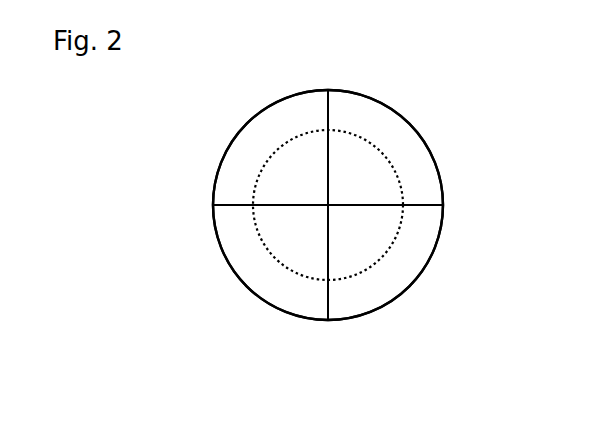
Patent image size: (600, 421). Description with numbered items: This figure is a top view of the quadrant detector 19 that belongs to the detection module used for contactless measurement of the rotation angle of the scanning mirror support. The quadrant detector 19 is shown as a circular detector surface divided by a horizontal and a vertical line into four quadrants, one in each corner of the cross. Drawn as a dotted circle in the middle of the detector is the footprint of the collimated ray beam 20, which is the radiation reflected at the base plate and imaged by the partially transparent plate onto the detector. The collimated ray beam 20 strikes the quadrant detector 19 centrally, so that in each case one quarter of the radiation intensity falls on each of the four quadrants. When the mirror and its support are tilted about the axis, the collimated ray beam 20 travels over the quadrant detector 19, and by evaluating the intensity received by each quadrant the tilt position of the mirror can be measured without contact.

The quadrant detector 19 is at (353, 90).
The collimated ray beam 20 is at (400, 182).